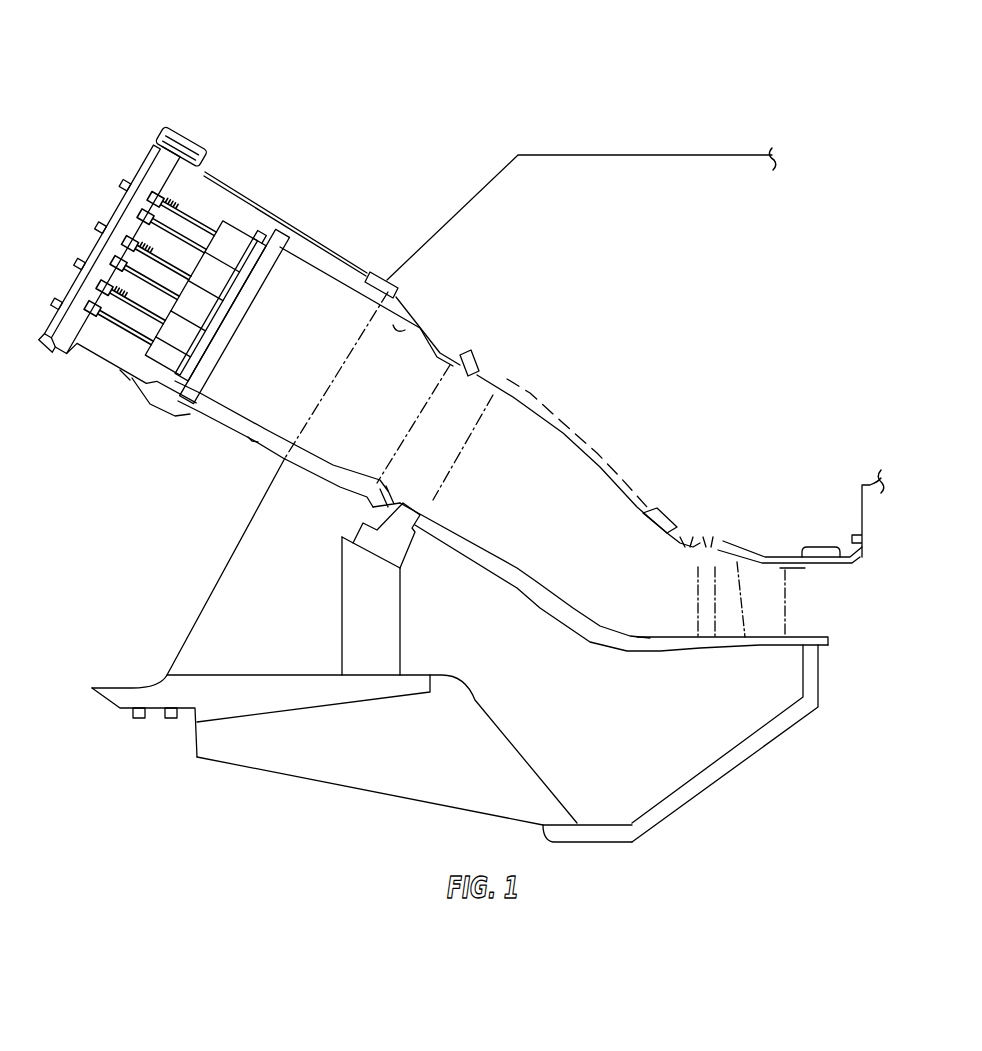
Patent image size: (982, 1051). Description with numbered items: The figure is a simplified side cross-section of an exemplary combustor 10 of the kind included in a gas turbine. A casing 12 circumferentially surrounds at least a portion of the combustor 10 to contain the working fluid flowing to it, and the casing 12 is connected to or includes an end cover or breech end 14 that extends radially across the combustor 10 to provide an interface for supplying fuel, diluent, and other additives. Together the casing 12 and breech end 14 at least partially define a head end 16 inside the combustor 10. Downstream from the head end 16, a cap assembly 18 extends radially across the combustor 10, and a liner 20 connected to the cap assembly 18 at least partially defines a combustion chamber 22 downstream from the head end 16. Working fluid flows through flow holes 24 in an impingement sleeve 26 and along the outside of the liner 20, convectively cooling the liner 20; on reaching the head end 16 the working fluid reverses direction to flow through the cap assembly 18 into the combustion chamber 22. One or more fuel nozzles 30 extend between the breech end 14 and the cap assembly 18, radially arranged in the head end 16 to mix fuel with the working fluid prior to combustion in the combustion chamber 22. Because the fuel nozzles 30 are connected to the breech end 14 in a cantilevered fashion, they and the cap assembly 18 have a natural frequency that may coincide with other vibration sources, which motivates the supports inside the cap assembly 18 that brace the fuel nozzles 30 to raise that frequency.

The combustor 10 is at (352, 112).
The casing 12 is at (323, 247).
The breech end 14 is at (72, 303).
The head end 16 is at (120, 401).
The cap assembly 18 is at (153, 407).
The liner 20 is at (408, 330).
The combustion chamber 22 is at (300, 362).
The flow holes 24 is at (507, 381).
The impingement sleeve 26 is at (547, 403).
The fuel nozzles 30 is at (168, 330).